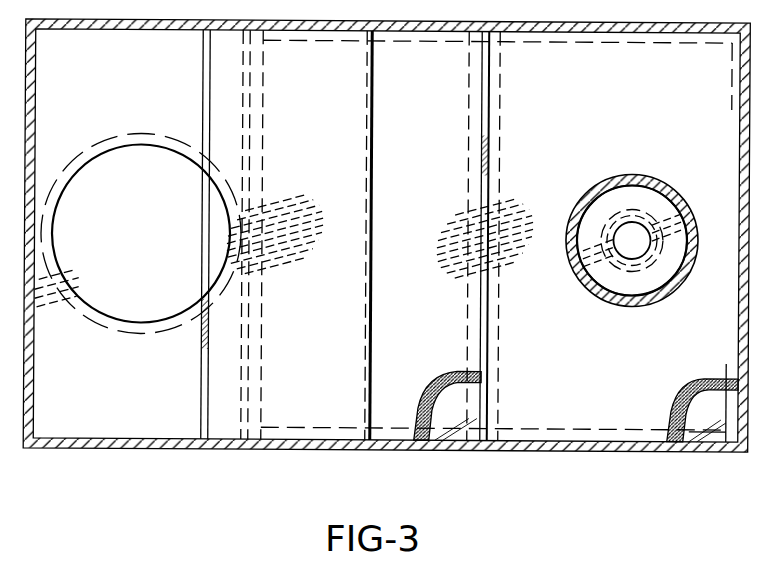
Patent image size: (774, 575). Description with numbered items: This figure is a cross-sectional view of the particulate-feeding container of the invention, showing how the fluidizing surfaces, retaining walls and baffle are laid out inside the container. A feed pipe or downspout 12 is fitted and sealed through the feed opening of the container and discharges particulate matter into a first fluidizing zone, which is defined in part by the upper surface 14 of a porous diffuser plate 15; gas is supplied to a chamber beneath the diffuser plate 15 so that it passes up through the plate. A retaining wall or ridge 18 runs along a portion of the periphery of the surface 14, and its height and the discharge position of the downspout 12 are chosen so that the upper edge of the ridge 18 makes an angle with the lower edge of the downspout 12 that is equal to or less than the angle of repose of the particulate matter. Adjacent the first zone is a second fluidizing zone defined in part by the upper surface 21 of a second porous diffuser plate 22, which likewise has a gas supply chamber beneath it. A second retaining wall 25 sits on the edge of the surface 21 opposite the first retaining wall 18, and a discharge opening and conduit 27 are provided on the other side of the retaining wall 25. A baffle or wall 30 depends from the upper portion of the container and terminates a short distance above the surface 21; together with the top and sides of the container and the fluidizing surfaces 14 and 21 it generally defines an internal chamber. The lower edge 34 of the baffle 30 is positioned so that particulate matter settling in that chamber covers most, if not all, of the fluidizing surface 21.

The downspout 12 is at (652, 177).
The upper surface 14 is at (636, 379).
The porous diffuser plate 15 is at (702, 403).
The retaining wall 18 is at (489, 343).
The upper surface 21 is at (432, 351).
The porous diffuser plate 22 is at (447, 405).
The second retaining wall 25 is at (262, 172).
The conduit 27 is at (113, 149).
The baffle 30 is at (308, 362).
The lower edge 34 is at (371, 108).